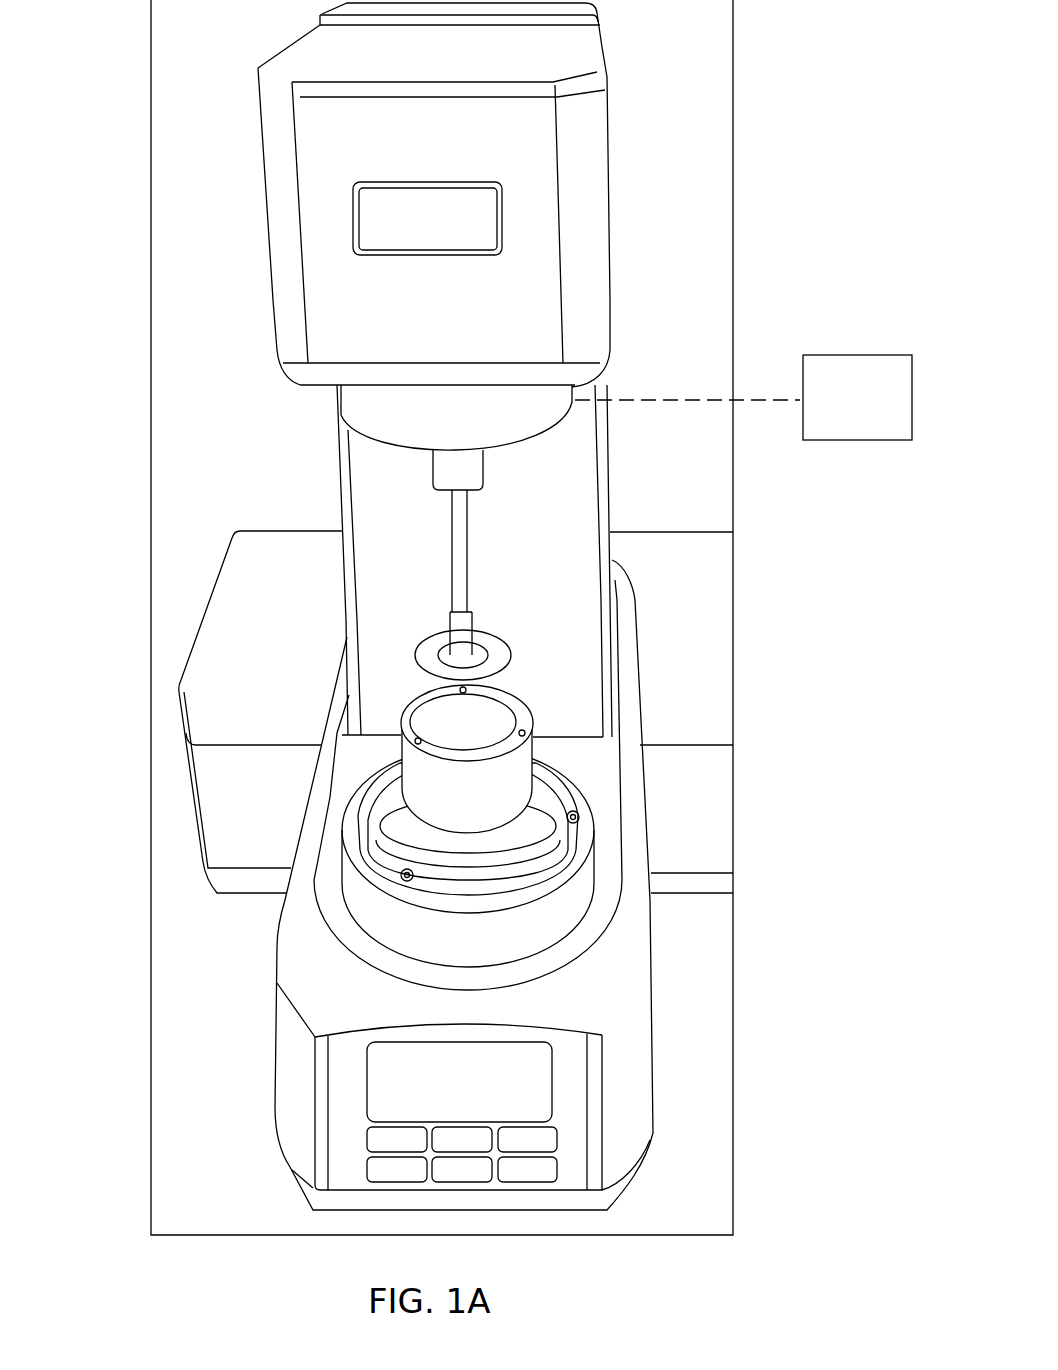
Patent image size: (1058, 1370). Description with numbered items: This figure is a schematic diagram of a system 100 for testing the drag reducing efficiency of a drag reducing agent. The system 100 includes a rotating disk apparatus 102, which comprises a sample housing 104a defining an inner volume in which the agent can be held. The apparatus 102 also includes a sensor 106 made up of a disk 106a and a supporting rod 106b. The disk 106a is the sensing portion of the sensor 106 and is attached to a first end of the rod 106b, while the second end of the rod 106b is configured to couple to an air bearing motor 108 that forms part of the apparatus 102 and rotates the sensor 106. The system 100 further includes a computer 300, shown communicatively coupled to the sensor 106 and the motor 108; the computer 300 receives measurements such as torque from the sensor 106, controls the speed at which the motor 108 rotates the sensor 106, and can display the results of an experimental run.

The system 100 is at (468, 1274).
The rotating disk apparatus 102 is at (240, 934).
The sample housing 104a is at (510, 777).
The sensor 106 is at (279, 572).
The disk 106a is at (417, 660).
The supporting rod 106b is at (452, 533).
The air bearing motor 108 is at (357, 403).
The computer 300 is at (878, 410).